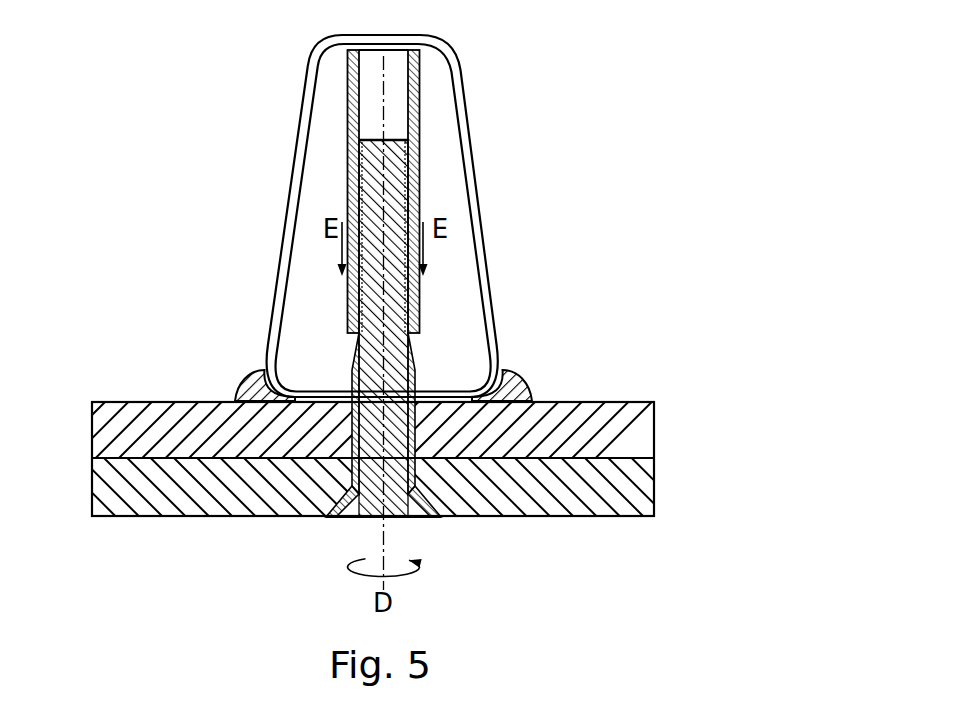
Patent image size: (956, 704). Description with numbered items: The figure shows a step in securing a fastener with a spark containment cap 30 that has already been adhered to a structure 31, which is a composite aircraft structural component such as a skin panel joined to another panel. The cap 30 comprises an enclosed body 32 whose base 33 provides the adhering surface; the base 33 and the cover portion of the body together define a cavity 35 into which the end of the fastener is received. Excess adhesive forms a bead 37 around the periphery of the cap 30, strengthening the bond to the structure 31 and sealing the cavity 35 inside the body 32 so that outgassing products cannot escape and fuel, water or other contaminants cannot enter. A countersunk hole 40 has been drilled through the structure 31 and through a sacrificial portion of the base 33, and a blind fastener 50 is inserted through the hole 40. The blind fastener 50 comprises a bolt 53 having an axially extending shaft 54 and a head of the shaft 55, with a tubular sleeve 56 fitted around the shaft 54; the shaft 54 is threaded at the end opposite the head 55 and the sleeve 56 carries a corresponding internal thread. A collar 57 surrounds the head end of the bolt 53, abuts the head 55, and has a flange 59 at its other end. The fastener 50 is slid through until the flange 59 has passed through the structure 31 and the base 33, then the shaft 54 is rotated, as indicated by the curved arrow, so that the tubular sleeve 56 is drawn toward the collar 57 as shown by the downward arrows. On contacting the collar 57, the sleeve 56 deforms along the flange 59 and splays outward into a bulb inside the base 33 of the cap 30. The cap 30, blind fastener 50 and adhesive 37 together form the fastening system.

The spark containment cap 30 is at (460, 52).
The structure 31 is at (123, 395).
The enclosed body 32 is at (276, 268).
The base 33 is at (447, 393).
The cavity 35 is at (452, 178).
The bead 37 is at (243, 382).
The hole 40 is at (345, 478).
The blind fastener 50 is at (348, 178).
The bolt 53 is at (409, 519).
The shaft 54 is at (368, 325).
The head of the shaft 55 is at (433, 510).
The tubular sleeve 56 is at (419, 108).
The collar 57 is at (349, 495).
The flange 59 is at (413, 362).